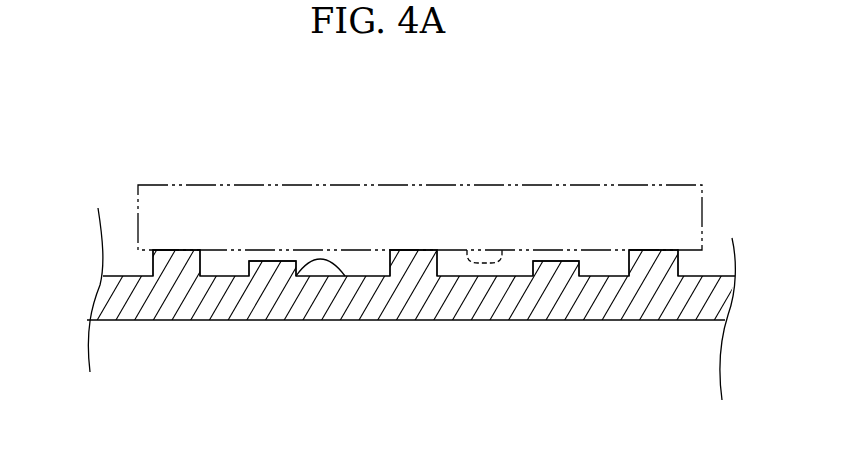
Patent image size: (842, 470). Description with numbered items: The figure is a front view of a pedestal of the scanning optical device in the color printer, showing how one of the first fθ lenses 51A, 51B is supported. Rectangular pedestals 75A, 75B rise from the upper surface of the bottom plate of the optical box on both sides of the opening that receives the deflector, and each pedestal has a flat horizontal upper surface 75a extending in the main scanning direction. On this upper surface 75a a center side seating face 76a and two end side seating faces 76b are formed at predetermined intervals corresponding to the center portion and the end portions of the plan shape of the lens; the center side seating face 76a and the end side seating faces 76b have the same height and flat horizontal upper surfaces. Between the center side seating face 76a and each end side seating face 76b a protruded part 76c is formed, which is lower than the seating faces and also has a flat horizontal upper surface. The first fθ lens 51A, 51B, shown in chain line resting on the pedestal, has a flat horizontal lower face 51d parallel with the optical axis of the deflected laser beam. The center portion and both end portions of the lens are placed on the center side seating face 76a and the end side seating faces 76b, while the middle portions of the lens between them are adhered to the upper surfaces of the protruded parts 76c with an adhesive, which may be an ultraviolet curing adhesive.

The first fθ lens 51A is at (420, 165).
The first fθ lens 51B is at (357, 197).
The lower face 51d is at (502, 248).
The pedestal 75A is at (431, 319).
The pedestal 75B is at (415, 258).
The upper surface 75a is at (296, 276).
The center side seating face 76a is at (417, 252).
The end side seating face 76b is at (182, 250).
The protruded part 76c is at (282, 262).